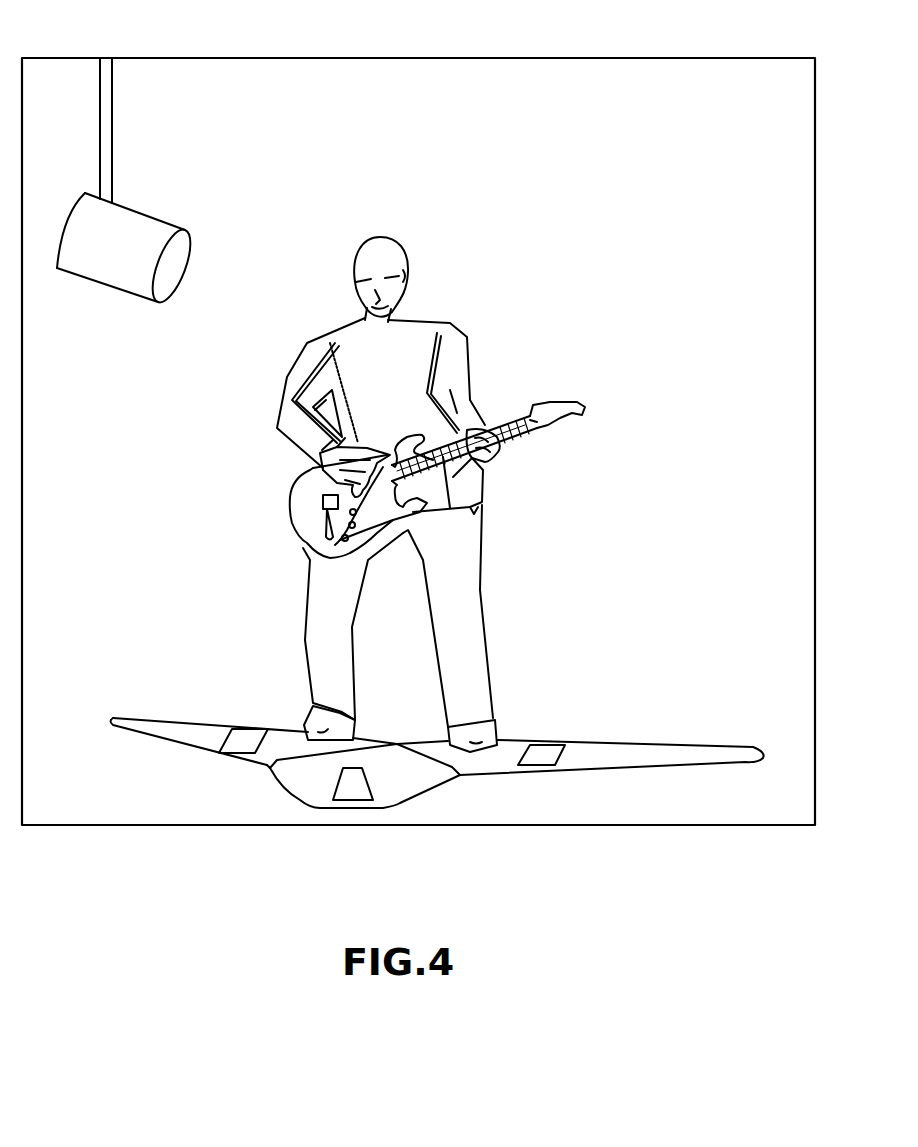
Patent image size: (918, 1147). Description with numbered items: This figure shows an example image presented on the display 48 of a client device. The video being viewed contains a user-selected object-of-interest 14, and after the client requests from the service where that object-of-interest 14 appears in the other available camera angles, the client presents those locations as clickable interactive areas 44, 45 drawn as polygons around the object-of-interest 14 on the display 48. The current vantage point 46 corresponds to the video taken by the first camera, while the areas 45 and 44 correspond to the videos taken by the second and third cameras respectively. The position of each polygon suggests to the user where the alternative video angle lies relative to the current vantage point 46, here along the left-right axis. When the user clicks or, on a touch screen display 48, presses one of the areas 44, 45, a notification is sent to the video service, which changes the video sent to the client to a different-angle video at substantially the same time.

The object-of-interest 14 is at (387, 265).
The display 48 is at (780, 207).
The clickable interactive area 45 is at (268, 750).
The current vantage point 46 is at (387, 785).
The clickable interactive area 44 is at (573, 755).